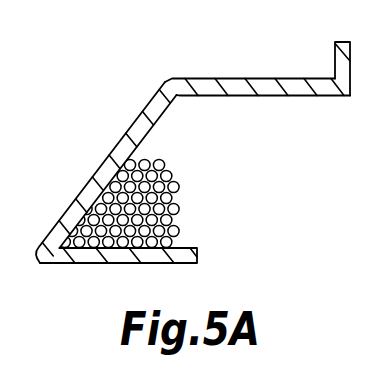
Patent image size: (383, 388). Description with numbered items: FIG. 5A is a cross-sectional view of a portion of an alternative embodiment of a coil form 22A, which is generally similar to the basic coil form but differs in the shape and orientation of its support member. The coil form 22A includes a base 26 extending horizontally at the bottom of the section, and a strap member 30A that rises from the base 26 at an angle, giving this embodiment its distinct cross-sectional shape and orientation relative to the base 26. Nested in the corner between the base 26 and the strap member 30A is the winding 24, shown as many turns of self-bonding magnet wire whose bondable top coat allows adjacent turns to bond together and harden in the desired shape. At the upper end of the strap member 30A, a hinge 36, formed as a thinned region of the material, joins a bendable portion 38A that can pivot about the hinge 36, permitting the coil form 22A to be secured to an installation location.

The coil form 22A is at (118, 102).
The strap member 30A is at (107, 165).
The hinge 36 is at (173, 79).
The bendable portion 38A is at (333, 54).
The base 26 is at (98, 264).
The winding 24 is at (178, 226).